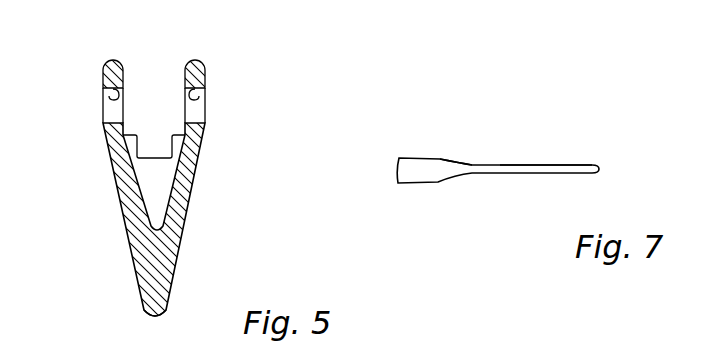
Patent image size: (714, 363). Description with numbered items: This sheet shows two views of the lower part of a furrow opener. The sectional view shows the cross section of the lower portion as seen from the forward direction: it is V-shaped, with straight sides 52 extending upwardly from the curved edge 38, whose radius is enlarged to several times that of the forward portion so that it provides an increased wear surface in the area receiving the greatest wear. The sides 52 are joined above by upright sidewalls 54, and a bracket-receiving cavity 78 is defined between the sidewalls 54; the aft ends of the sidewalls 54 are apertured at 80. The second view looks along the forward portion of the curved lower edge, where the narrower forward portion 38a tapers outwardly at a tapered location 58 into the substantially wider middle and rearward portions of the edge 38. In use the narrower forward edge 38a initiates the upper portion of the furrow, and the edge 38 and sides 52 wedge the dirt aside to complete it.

In FIG. 5, the curved edge 38 is at (151, 320).
In FIG. 7, the curved edge 38 is at (417, 165).
In FIG. 7, the forward portion of the curved edge 38a is at (556, 165).
In FIG. 5, the straight sides 52 is at (124, 212).
In FIG. 5, the upright sidewalls 54 is at (105, 67).
In FIG. 7, the tapered location 58 is at (455, 162).
In FIG. 5, the bracket-receiving cavity 78 is at (160, 72).
In FIG. 5, the apertures 80 is at (110, 99).